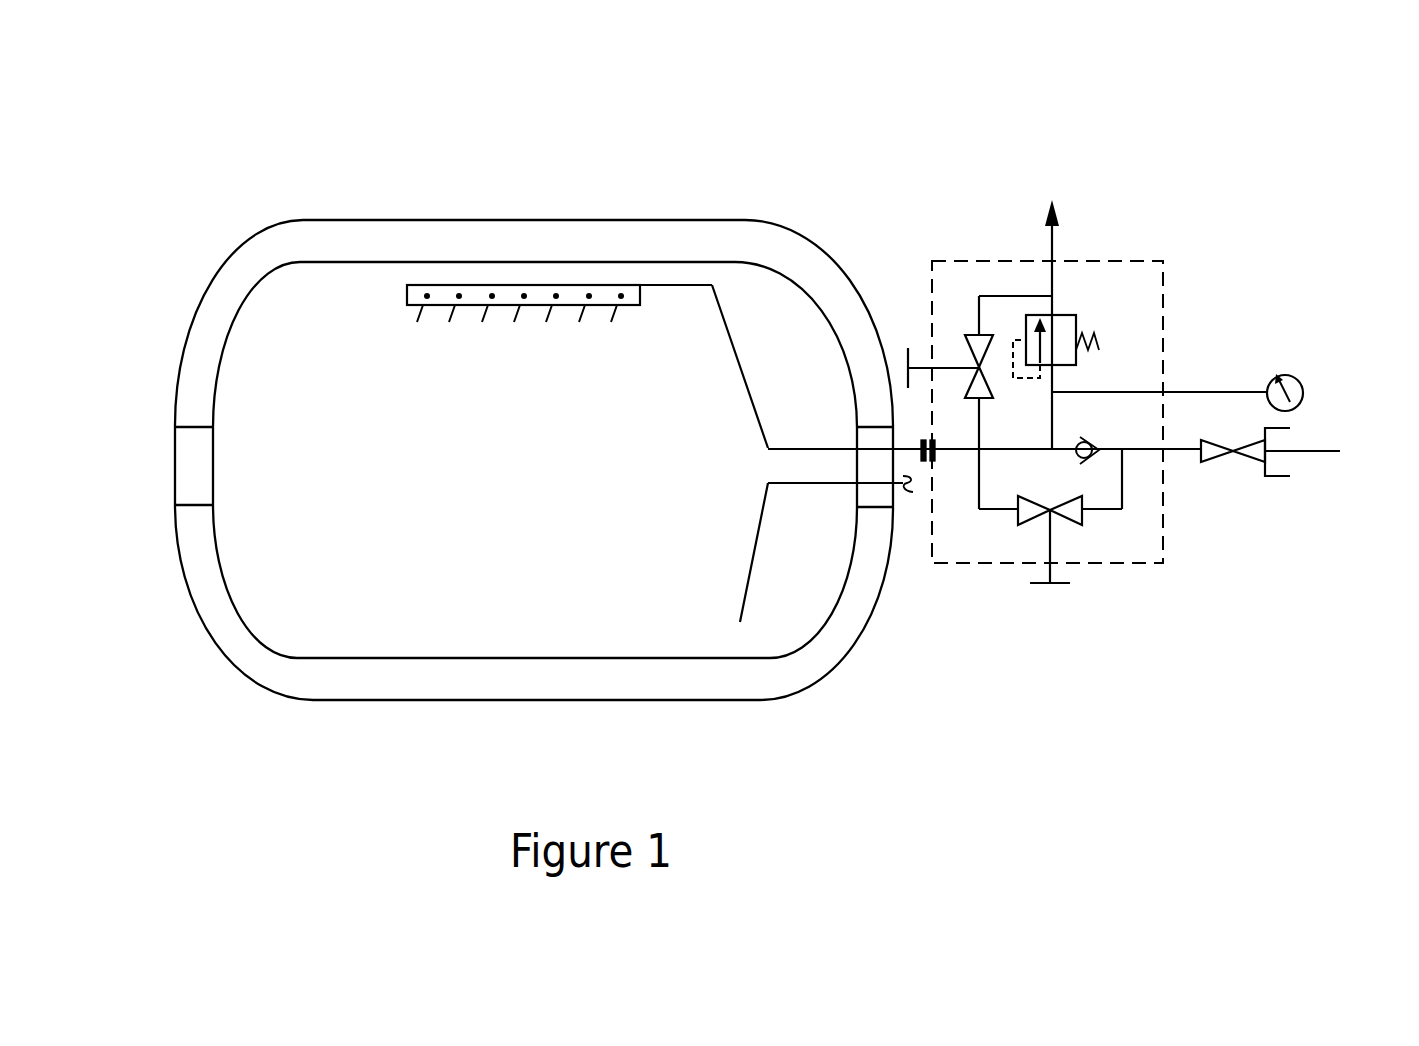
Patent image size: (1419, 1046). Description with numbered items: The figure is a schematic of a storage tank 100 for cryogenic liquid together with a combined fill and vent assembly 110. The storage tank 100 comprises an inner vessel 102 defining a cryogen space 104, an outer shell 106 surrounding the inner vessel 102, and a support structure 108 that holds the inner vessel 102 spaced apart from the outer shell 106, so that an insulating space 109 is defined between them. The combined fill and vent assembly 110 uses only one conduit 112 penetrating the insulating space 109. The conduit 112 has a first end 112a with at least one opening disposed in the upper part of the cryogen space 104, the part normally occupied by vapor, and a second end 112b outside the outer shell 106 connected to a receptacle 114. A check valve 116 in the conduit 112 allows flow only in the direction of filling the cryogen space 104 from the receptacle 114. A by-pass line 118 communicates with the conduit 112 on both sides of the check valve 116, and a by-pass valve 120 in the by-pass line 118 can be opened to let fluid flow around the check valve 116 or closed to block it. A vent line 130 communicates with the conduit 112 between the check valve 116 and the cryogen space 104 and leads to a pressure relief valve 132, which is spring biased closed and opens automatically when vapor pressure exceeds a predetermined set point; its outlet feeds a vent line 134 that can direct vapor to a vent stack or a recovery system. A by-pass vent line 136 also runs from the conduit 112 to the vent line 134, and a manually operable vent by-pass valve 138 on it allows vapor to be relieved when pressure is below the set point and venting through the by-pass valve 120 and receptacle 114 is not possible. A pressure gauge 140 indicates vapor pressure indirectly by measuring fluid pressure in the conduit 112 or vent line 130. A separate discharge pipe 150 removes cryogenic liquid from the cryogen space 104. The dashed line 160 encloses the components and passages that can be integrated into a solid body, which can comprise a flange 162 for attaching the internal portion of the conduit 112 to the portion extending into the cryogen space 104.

The storage tank 100 is at (280, 88).
The inner vessel 102 is at (220, 373).
The cryogen space 104 is at (521, 497).
The outer shell 106 is at (222, 277).
The support structure 108 is at (858, 588).
The insulating space 109 is at (222, 607).
The combined fill and vent assembly 110 is at (1152, 122).
The conduit 112 is at (1003, 450).
The first end 112a is at (509, 295).
The second end 112b is at (1172, 453).
The receptacle 114 is at (1301, 452).
The check valve 116 is at (1100, 510).
The by-pass line 118 is at (1125, 483).
The by-pass valve 120 is at (1073, 522).
The vent line 130 is at (1052, 427).
The pressure relief valve 132 is at (1065, 327).
The vent line 134 is at (1052, 238).
The by-pass vent line 136 is at (1015, 295).
The vent by-pass valve 138 is at (978, 347).
The pressure gauge 140 is at (1289, 377).
The discharge pipe 150 is at (745, 597).
The dashed line 160 is at (1112, 261).
The flange 162 is at (938, 456).